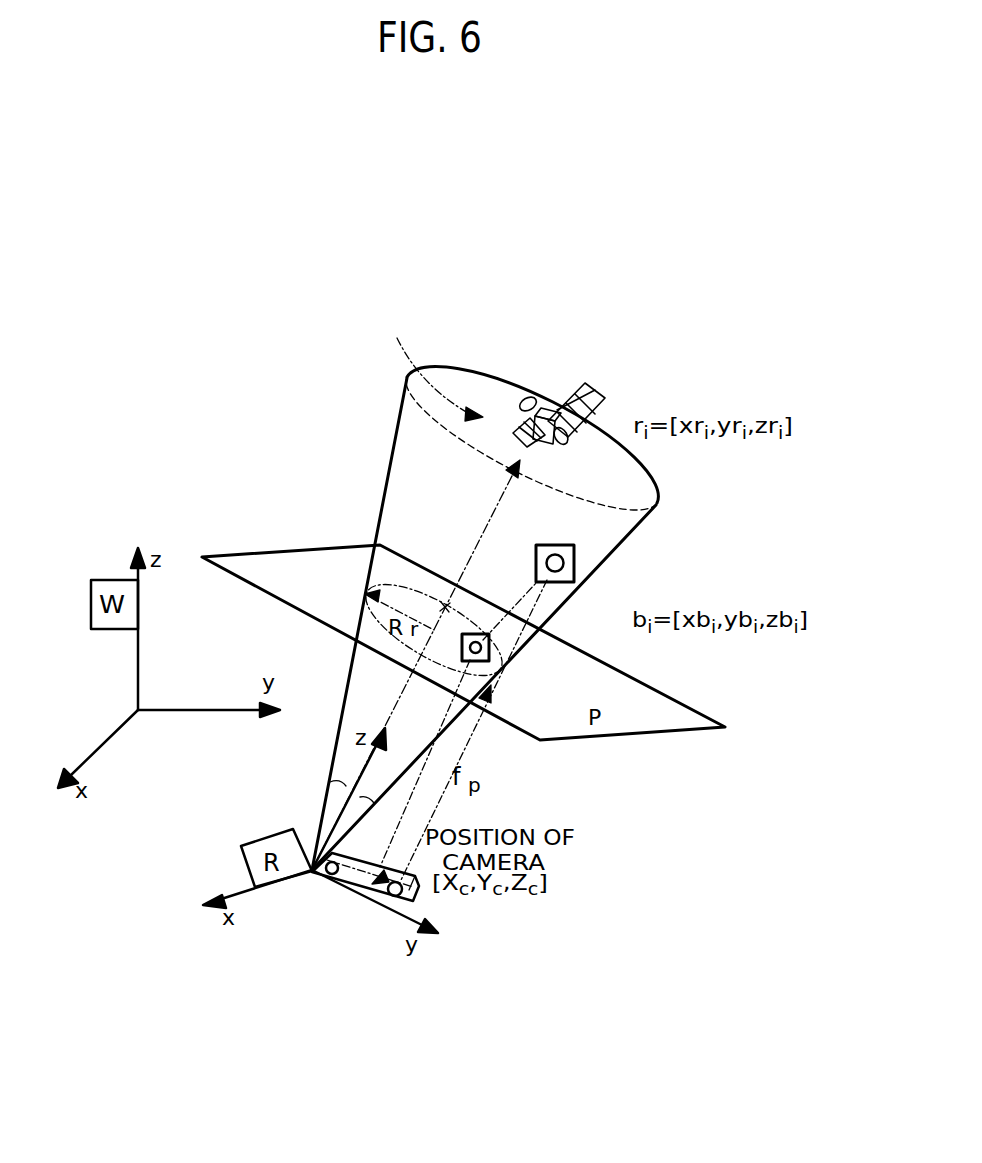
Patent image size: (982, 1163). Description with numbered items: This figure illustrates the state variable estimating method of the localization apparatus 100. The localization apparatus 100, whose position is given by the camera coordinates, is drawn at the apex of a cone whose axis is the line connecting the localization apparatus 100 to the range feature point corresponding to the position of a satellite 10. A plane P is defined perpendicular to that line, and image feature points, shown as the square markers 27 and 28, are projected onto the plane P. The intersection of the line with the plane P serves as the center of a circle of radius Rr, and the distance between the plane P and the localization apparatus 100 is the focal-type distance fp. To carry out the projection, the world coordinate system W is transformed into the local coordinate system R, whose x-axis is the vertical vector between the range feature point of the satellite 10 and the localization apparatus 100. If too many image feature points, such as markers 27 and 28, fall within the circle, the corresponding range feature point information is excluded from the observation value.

The satellite 10 is at (603, 389).
The marker on plane (position r_i) 27 is at (574, 567).
The marker on plane (position b_i) 28 is at (489, 650).
The localization apparatus 100 is at (415, 900).